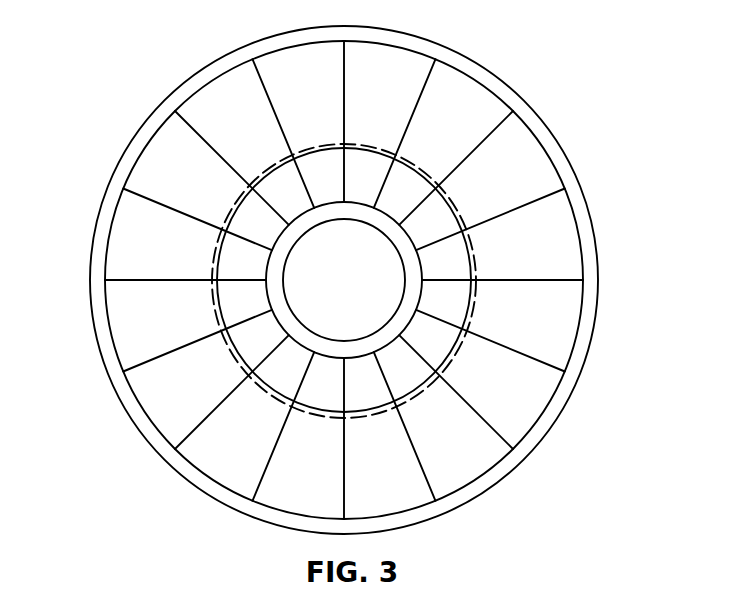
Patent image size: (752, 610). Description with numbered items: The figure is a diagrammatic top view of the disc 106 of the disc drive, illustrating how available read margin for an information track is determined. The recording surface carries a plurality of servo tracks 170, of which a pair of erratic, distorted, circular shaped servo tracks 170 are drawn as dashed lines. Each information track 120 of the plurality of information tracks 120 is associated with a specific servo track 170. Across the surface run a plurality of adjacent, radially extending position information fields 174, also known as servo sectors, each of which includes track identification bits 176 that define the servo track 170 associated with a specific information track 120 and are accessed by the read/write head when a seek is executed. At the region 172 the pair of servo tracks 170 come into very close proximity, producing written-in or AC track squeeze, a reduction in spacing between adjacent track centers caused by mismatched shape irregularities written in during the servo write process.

The disc 106 is at (166, 70).
The information track 120 is at (230, 200).
The servo track 170 is at (373, 147).
The region 172 is at (468, 255).
The position information fields 174 is at (540, 280).
The track identification bits 176 is at (200, 417).